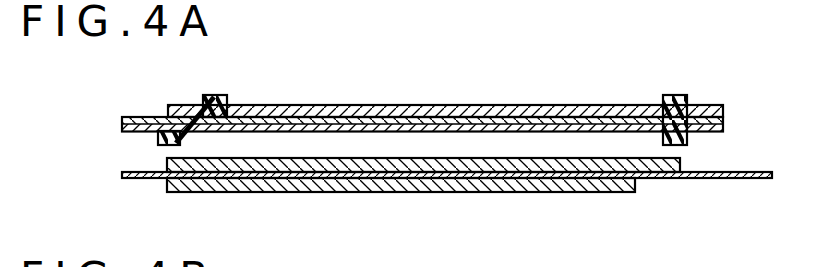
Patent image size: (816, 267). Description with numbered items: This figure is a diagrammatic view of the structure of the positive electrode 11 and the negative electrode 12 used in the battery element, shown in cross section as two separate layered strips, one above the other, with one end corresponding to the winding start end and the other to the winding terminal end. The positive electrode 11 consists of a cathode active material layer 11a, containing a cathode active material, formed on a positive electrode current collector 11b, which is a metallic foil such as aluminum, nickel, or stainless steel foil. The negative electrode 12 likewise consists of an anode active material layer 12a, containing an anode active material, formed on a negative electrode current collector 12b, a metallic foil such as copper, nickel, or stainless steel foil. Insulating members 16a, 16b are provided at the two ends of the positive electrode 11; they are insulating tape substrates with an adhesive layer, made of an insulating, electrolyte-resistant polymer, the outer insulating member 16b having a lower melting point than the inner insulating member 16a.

The positive electrode 11 is at (422, 78).
The cathode active material layer 11a is at (392, 50).
The positive electrode current collector 11b is at (368, 112).
The negative electrode 12 is at (447, 212).
The anode active material layer 12a is at (302, 190).
The negative electrode current collector 12b is at (293, 234).
The insulating member 16a is at (162, 127).
The insulating member 16b is at (723, 106).